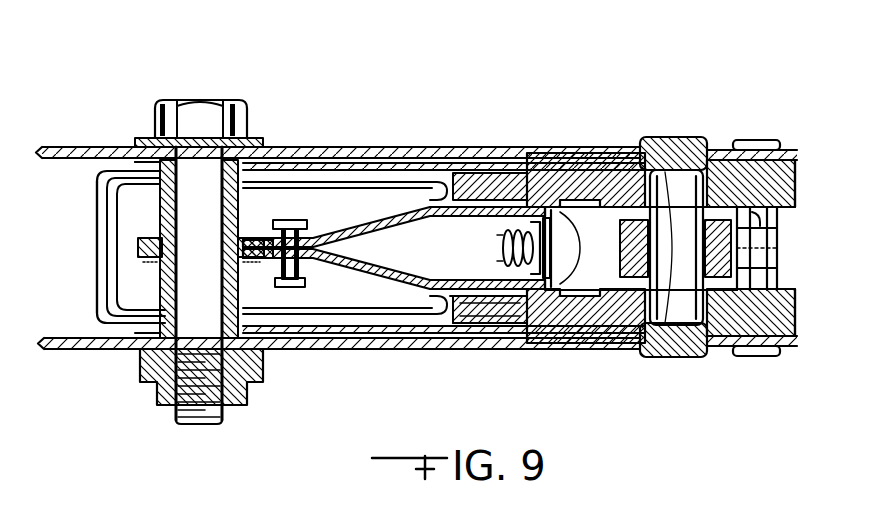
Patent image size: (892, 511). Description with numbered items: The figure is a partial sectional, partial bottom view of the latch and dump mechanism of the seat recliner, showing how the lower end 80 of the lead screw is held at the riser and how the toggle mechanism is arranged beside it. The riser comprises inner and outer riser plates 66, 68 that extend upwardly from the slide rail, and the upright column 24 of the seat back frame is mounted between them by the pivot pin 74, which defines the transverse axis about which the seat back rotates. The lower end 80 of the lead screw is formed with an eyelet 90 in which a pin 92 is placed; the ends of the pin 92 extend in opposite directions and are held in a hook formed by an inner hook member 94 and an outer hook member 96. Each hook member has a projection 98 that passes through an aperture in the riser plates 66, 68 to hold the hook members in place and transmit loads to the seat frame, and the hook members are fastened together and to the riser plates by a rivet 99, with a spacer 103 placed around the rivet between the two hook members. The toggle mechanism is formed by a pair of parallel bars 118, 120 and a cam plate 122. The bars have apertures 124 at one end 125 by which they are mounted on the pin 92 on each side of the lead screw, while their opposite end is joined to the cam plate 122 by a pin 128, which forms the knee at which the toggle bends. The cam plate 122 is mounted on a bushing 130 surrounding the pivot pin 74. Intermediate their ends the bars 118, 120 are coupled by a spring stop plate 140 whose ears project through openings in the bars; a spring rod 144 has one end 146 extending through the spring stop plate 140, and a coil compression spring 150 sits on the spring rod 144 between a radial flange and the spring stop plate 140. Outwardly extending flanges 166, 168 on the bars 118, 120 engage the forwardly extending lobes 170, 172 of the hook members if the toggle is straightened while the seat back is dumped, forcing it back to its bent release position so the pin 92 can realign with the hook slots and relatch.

The upright column 24 is at (97, 254).
The inner riser plate 66 is at (332, 351).
The outer riser plate 68 is at (338, 147).
The pivot pin 74 is at (196, 100).
The lower end of the lead screw 80 is at (778, 257).
The eyelet 90 is at (688, 326).
The pin 92 is at (717, 144).
The inner hook member 94 is at (583, 347).
The outer hook member 96 is at (557, 151).
The projection 98 is at (663, 137).
The rivet 99 is at (763, 142).
The spacer 103 is at (780, 221).
The bar 118 is at (375, 213).
The bar 120 is at (415, 284).
The cam plate 122 is at (248, 231).
The aperture 124 is at (713, 150).
The end of the bars 125 is at (780, 233).
The pin 128 is at (296, 288).
The bushing 130 is at (147, 197).
The spring stop plate 140 is at (595, 150).
The spring rod 144 is at (498, 248).
The end of the spring rod 146 is at (627, 150).
The coil compression spring 150 is at (445, 150).
The outwardly extending flange 166 is at (503, 350).
The outwardly extending flange 168 is at (514, 145).
The forwardly extending lobe 170 is at (477, 150).
The forwardly extending lobe 172 is at (453, 349).